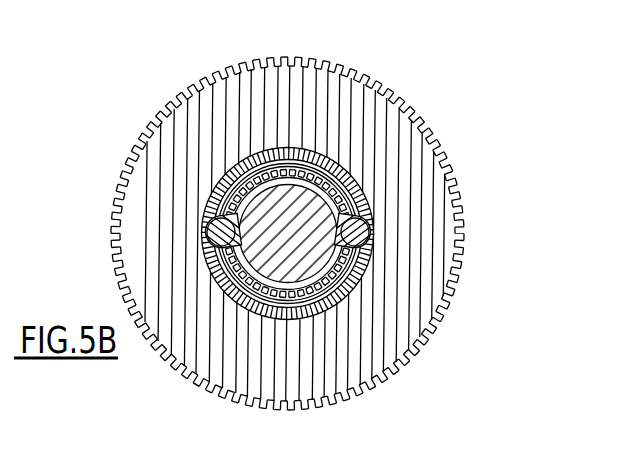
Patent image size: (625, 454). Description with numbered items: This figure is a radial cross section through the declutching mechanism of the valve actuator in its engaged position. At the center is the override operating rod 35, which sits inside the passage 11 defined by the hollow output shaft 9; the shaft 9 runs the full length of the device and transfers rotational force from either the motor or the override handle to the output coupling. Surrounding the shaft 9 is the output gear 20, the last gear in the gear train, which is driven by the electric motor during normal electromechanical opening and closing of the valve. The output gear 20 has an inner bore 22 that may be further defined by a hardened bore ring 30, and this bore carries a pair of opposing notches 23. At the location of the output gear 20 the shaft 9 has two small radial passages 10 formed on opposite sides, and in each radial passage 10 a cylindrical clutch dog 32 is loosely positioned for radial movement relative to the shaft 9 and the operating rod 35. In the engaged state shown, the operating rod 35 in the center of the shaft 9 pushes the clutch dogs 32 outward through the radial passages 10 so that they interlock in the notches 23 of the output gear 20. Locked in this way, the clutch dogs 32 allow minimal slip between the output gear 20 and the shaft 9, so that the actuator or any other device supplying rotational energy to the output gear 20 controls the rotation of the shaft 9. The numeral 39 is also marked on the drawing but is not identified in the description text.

The output gear 20 is at (302, 97).
The passage 11 is at (248, 304).
The inner bore 22 is at (252, 163).
The hardened bore ring 30 is at (325, 155).
The shaft 9 is at (342, 181).
The clearance gap 39 is at (332, 262).
The operating rod 35 is at (305, 253).
The notches 23 is at (212, 215).
The clutch dogs 32 is at (217, 230).
The radial passages 10 is at (217, 260).